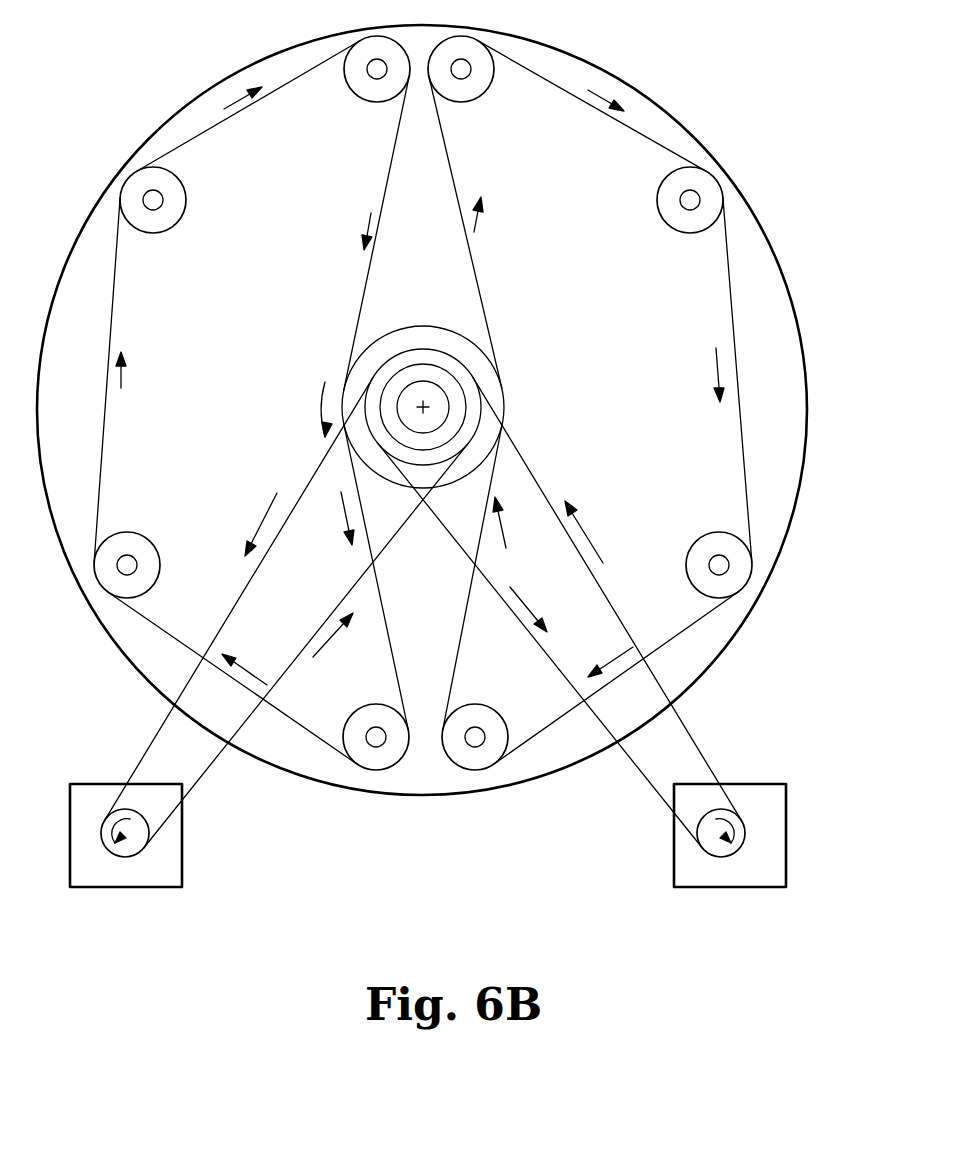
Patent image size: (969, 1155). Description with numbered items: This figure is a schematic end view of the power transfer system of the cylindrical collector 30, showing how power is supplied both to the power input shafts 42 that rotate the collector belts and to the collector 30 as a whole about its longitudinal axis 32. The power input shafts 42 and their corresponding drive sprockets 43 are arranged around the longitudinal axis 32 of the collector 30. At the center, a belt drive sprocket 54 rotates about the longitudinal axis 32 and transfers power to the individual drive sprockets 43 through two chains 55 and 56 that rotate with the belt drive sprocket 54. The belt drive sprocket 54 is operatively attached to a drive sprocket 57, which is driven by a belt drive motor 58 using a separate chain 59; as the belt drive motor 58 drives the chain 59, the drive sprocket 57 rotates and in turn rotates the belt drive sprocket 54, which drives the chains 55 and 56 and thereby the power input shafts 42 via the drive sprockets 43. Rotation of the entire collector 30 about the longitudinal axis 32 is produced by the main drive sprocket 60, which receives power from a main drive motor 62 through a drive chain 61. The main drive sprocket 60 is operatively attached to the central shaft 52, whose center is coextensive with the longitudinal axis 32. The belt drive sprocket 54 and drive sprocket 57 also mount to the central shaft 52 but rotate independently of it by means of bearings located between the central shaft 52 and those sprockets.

The collector 30 is at (803, 163).
The longitudinal axis 32 is at (423, 407).
The power input shaft 42 is at (423, 453).
The drive sprocket 43 is at (467, 403).
The central shaft 52 is at (425, 381).
The belt drive sprocket 54 is at (378, 337).
The chain 55 is at (371, 257).
The chain 56 is at (474, 268).
The drive sprocket 57 is at (387, 358).
The belt drive motor 58 is at (183, 855).
The chain 59 is at (140, 763).
The main drive sprocket 60 is at (440, 365).
The drive chain 61 is at (681, 718).
The main drive motor 62 is at (740, 889).